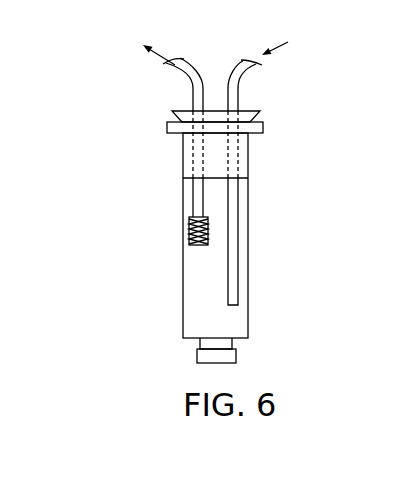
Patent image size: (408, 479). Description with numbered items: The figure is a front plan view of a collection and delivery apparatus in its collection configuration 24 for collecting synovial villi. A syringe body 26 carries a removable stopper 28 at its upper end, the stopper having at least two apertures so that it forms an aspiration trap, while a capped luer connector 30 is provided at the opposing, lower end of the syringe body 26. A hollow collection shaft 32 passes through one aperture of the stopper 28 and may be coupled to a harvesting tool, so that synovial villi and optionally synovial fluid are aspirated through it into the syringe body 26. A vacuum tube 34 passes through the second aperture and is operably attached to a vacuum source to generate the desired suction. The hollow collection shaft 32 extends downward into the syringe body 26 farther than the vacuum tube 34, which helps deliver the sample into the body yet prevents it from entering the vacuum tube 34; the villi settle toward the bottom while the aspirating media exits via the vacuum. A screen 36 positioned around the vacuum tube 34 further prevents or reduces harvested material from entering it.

The collection configuration 24 is at (96, 174).
The syringe body 26 is at (249, 207).
The removable stopper 28 is at (243, 113).
The capped luer connector 30 is at (197, 352).
The hollow collection shaft 32 is at (247, 83).
The vacuum tube 34 is at (192, 85).
The screen 36 is at (189, 230).